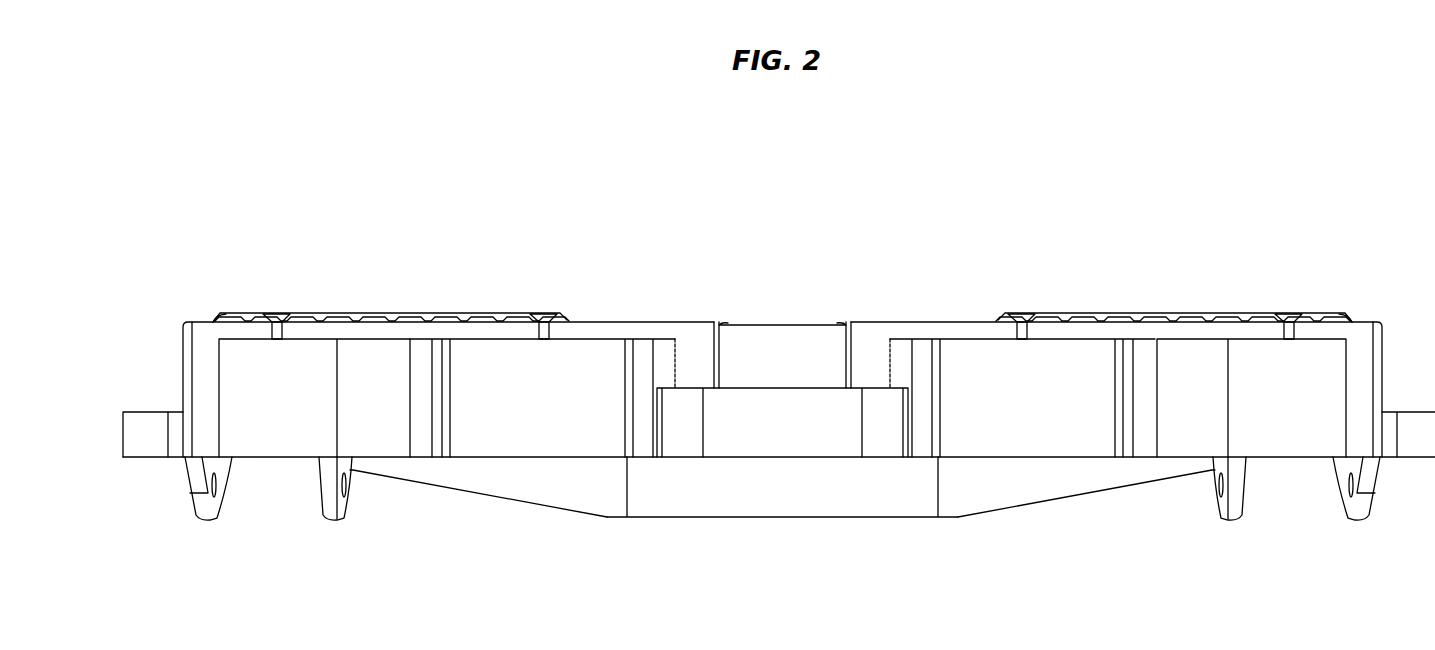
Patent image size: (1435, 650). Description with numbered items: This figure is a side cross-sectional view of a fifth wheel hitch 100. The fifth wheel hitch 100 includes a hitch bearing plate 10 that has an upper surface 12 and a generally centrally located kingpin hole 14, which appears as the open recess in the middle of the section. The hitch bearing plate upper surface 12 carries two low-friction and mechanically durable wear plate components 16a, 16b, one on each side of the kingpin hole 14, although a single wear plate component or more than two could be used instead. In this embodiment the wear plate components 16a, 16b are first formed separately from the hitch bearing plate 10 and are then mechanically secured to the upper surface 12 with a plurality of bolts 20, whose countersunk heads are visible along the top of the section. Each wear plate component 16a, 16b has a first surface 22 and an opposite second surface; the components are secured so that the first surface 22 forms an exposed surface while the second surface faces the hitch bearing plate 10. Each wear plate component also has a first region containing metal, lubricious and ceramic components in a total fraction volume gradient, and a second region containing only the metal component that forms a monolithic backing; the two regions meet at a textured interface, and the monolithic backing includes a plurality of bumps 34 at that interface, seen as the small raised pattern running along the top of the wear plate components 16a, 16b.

The fifth wheel hitch 100 is at (181, 176).
The hitch bearing plate 10 is at (188, 375).
The upper surface 12 is at (198, 318).
The kingpin hole 14 is at (775, 335).
The wear plate component 16a is at (215, 318).
The wear plate component 16b is at (1337, 316).
The bolts 20 is at (275, 313).
The first surface 22 is at (478, 318).
The bumps 34 is at (348, 318).